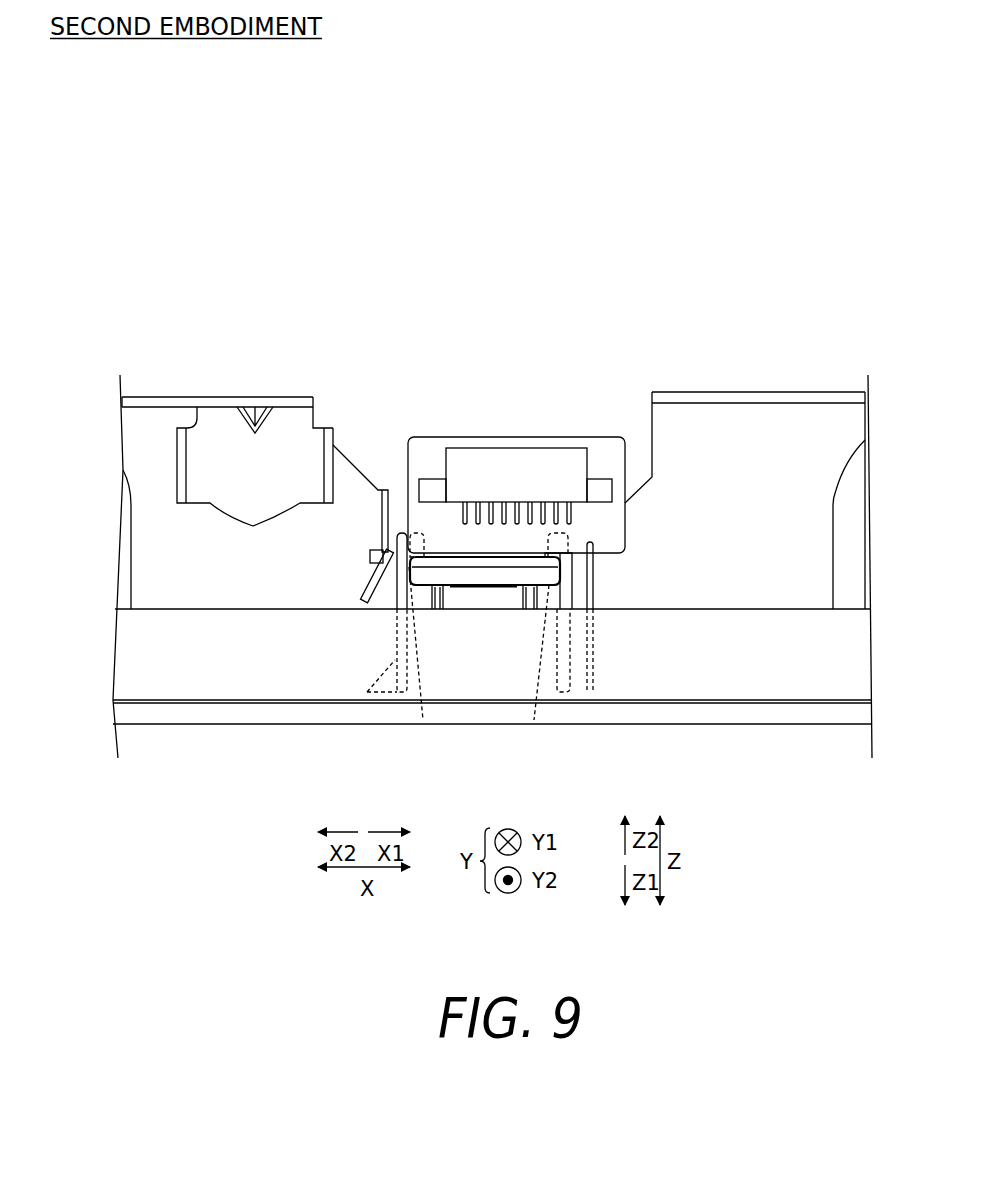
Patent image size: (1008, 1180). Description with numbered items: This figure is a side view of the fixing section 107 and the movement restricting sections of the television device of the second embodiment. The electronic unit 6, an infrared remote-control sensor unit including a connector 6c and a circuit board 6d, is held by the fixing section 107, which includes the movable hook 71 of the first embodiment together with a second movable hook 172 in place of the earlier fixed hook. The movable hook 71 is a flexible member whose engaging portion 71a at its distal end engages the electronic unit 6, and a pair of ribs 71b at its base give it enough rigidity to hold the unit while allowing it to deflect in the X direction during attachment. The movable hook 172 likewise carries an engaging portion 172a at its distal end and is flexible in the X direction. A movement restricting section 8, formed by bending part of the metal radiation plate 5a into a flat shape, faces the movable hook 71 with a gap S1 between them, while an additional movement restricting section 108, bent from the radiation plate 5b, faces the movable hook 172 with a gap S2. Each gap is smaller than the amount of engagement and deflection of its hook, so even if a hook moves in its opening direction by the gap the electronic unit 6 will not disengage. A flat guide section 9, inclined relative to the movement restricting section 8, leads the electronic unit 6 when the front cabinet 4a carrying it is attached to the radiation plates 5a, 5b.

The radiation plate 5a is at (257, 392).
The radiation plate 5b is at (708, 392).
The front cabinet 4a is at (248, 732).
The electronic unit 6 is at (523, 427).
The connector 6c is at (478, 448).
The circuit board 6d is at (573, 438).
The movement restricting section 8 is at (382, 485).
The guide section 9 is at (367, 582).
The movable hook 71 is at (402, 526).
The engaging portion 71a is at (423, 720).
The ribs 71b is at (383, 692).
The fixing section 107 is at (575, 572).
The movement restricting section 108 is at (596, 592).
The movable hook 172 is at (565, 695).
The engaging portion 172a is at (534, 720).
The gap S1 is at (392, 562).
The gap S2 is at (578, 602).